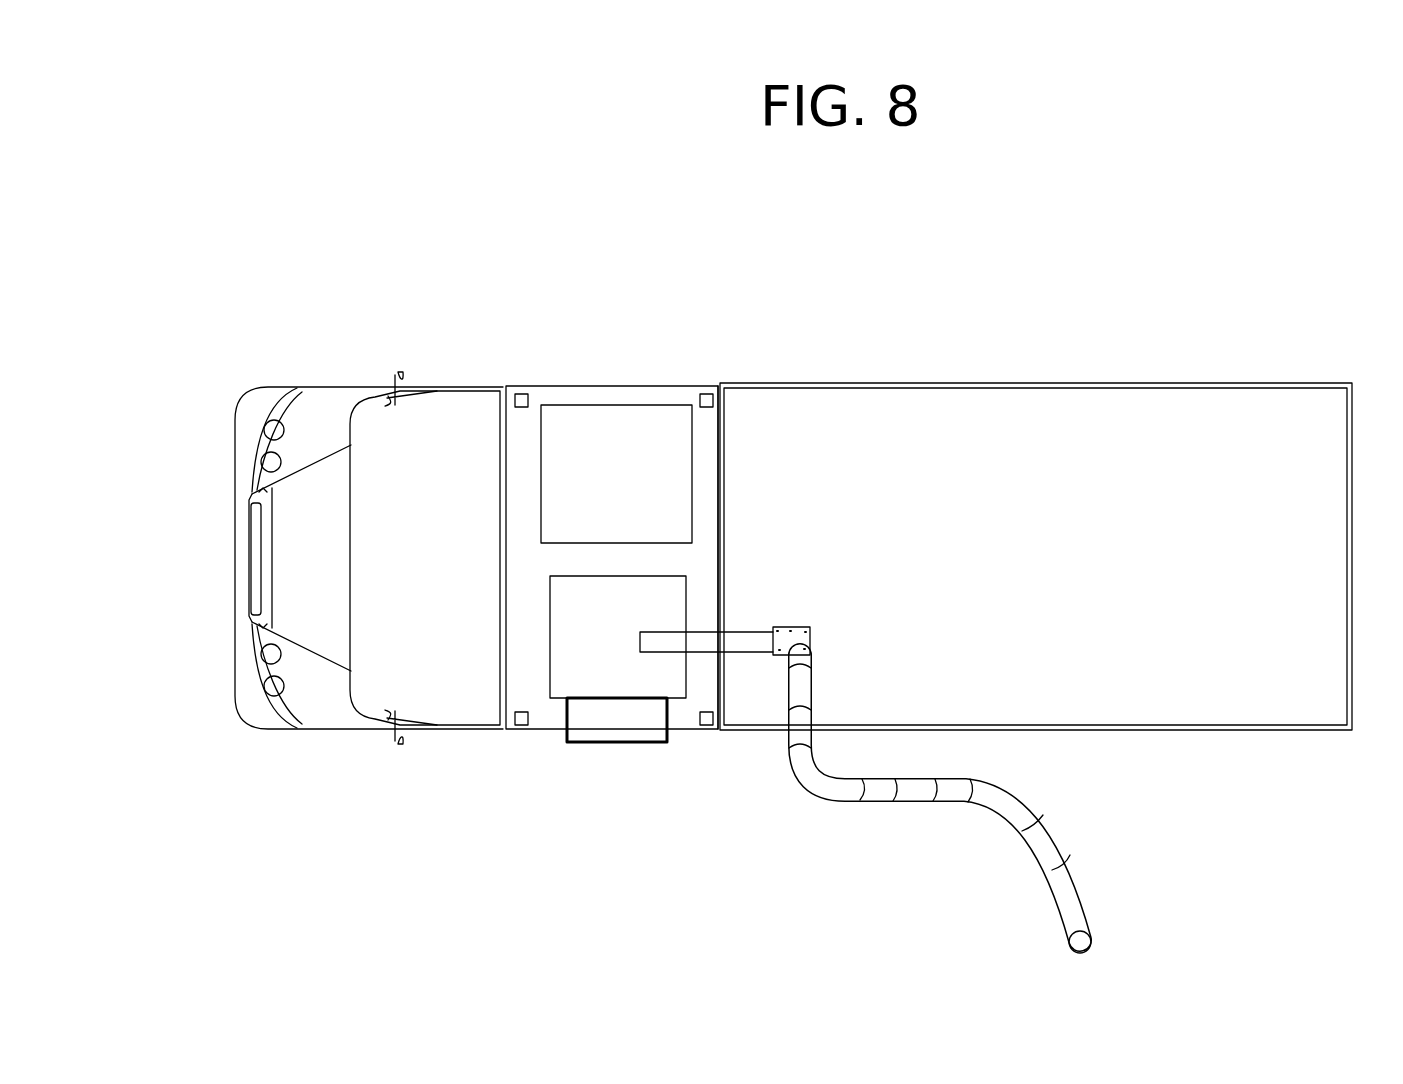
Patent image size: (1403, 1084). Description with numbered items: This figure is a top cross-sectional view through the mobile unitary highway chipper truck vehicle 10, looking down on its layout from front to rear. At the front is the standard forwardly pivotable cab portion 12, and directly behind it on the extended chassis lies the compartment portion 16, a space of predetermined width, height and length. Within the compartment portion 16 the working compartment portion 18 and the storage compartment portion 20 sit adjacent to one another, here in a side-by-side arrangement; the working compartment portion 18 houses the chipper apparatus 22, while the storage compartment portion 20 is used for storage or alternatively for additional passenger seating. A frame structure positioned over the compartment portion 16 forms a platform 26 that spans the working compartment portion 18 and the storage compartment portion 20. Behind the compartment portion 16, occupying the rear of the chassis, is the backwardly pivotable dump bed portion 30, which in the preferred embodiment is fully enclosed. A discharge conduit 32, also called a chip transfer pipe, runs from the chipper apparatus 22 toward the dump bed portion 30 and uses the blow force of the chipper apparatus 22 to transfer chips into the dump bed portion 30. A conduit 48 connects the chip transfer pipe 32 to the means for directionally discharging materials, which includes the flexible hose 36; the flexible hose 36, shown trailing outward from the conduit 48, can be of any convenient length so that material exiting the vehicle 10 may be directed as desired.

The mobile unitary highway chipper truck vehicle 10 is at (976, 232).
The cab portion 12 is at (307, 730).
The compartment portion 16 is at (697, 558).
The working compartment portion 18 is at (572, 657).
The storage compartment portion 20 is at (583, 409).
The chipper apparatus 22 is at (598, 743).
The platform 26 is at (612, 385).
The backwardly pivotable dump bed portion 30 is at (1173, 383).
The discharge conduit 32 is at (695, 652).
The flexible hose 36 is at (967, 780).
The conduit 48 is at (792, 642).